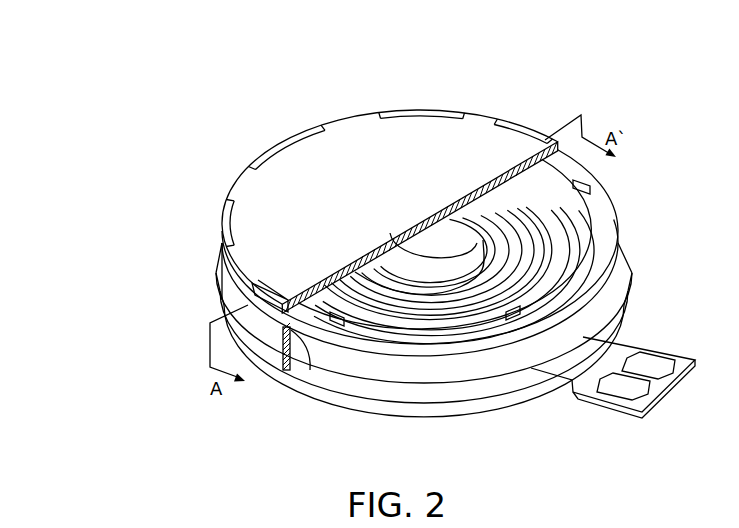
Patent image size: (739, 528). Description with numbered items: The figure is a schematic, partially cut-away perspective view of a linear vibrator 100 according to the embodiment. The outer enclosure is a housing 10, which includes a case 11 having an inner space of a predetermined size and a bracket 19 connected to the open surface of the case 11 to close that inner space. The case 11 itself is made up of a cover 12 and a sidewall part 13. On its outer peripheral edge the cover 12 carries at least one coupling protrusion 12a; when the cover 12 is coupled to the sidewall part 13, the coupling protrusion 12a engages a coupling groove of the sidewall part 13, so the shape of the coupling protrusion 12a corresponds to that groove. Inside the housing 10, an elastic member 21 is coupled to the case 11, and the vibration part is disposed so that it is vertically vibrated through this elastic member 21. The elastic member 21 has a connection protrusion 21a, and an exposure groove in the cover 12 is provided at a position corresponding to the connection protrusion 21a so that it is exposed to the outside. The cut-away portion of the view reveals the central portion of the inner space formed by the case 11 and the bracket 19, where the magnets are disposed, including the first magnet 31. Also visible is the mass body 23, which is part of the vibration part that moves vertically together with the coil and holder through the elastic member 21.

The linear vibrator 100 is at (276, 110).
The housing 10 is at (114, 227).
The case 11 is at (151, 181).
The cover 12 is at (234, 192).
The coupling protrusion 12a is at (484, 116).
The sidewall part 13 is at (230, 281).
The bracket 19 is at (222, 318).
The elastic member 21 is at (327, 310).
The connection protrusion 21a is at (292, 375).
The first magnet 31 is at (441, 245).
The mass body 23 is at (598, 299).